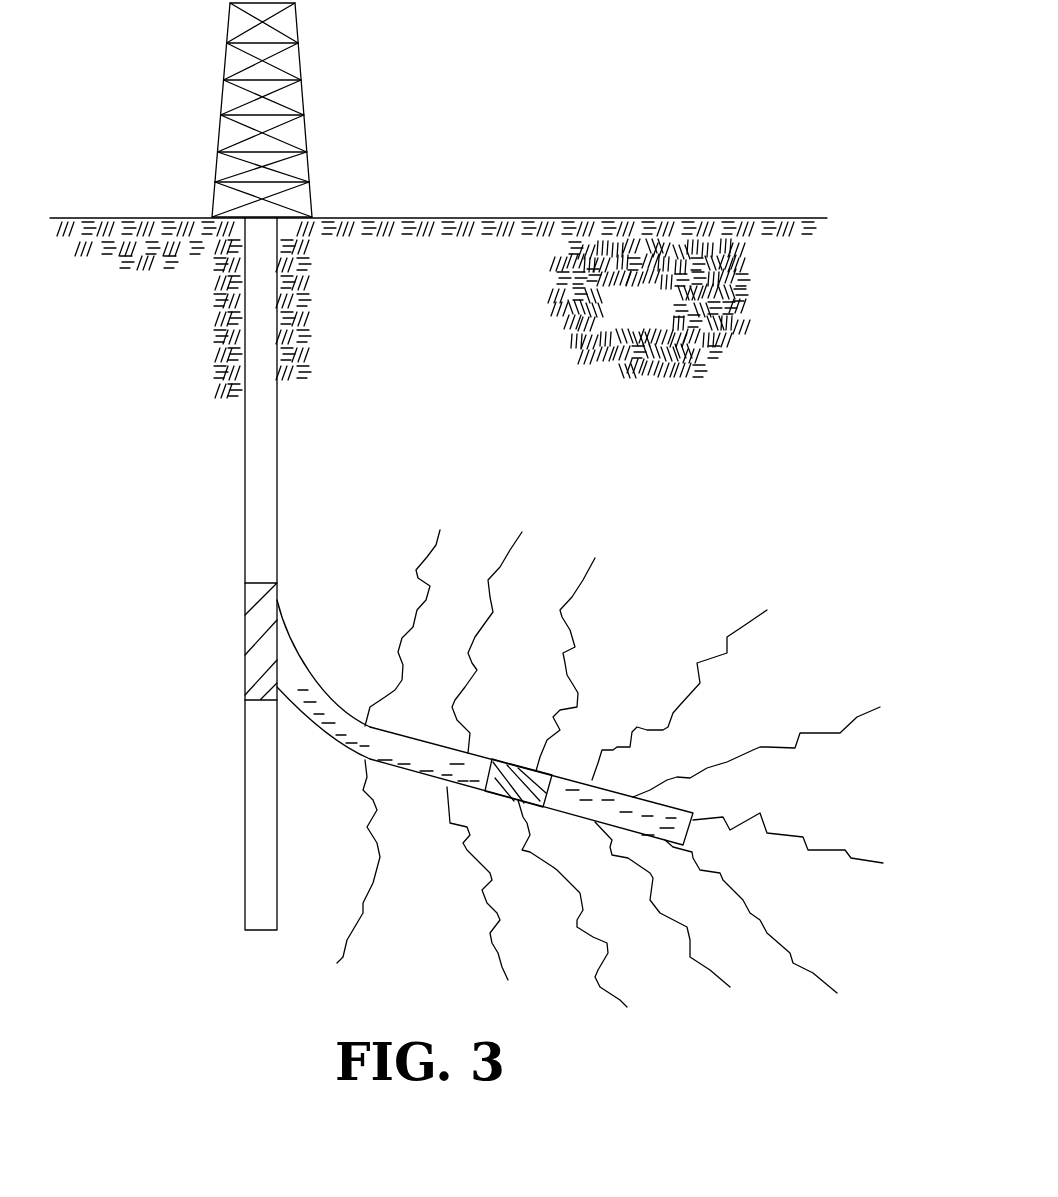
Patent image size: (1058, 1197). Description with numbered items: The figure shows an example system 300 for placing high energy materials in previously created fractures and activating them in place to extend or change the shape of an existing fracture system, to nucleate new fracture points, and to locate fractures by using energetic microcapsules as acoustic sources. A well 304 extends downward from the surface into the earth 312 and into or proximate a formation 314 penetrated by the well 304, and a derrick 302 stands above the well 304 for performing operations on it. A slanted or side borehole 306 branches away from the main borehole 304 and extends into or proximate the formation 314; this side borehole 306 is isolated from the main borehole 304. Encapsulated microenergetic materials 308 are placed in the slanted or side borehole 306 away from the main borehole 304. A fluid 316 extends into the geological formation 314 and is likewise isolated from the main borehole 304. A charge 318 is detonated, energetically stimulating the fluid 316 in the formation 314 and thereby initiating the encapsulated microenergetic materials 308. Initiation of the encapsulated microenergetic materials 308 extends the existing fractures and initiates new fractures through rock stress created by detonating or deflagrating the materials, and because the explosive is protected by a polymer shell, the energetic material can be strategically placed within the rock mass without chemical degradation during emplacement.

The system 300 is at (612, 151).
The derrick 302 is at (303, 107).
The well 304 is at (280, 407).
The slanted or side borehole 306 is at (320, 697).
The encapsulated microenergetic materials 308 is at (353, 738).
The earth 312 is at (668, 324).
The formation 314 is at (673, 655).
The fluid 316 is at (440, 765).
The charge 318 is at (522, 760).